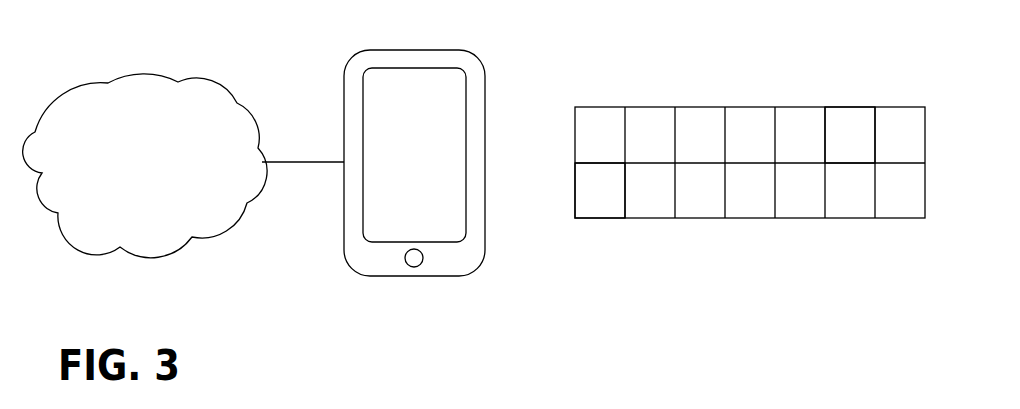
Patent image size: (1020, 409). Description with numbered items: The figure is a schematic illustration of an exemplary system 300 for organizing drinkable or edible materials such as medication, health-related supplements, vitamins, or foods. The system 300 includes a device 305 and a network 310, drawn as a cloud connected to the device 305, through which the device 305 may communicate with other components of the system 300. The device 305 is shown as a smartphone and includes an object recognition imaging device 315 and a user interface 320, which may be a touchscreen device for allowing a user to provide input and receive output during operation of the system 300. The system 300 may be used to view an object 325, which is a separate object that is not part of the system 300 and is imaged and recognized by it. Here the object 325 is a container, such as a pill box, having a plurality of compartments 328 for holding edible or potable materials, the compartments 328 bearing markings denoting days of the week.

The system 300 is at (280, 281).
The device 305 is at (480, 287).
The network 310 is at (122, 162).
The object recognition imaging device 315 is at (410, 68).
The user interface 320 is at (400, 231).
The object 325 is at (744, 242).
The compartments 328 is at (850, 108).